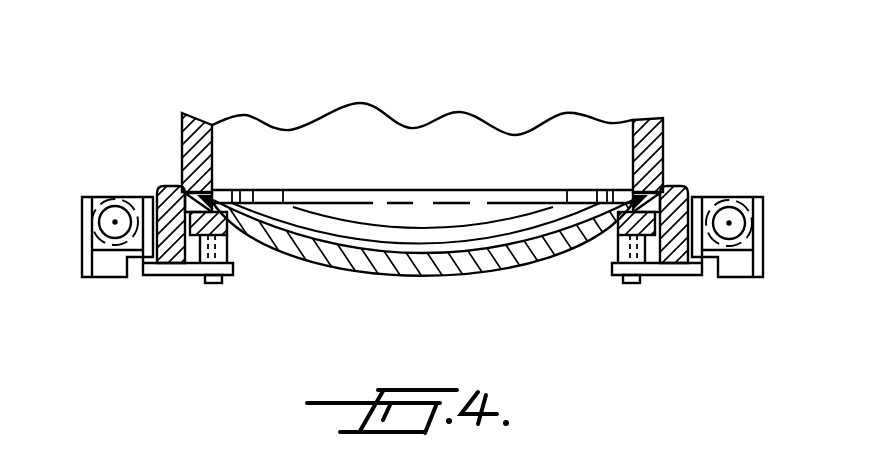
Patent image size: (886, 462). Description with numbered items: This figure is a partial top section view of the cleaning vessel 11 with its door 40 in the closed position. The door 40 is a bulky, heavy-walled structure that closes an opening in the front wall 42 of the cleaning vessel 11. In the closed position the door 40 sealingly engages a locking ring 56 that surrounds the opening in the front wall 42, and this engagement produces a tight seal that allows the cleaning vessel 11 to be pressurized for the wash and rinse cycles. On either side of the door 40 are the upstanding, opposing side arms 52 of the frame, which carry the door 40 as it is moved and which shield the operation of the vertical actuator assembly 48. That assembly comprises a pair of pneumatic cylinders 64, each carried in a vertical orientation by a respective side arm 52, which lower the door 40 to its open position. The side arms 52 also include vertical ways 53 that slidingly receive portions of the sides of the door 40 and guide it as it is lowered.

The cleaning vessel 11 is at (207, 104).
The door 40 is at (488, 272).
The front wall 42 is at (201, 208).
The vertical actuator assembly 48 is at (443, 218).
The side arms 52 is at (443, 218).
The vertical ways 53 is at (128, 272).
The locking ring 56 is at (173, 255).
The pneumatic cylinders 64 is at (102, 217).